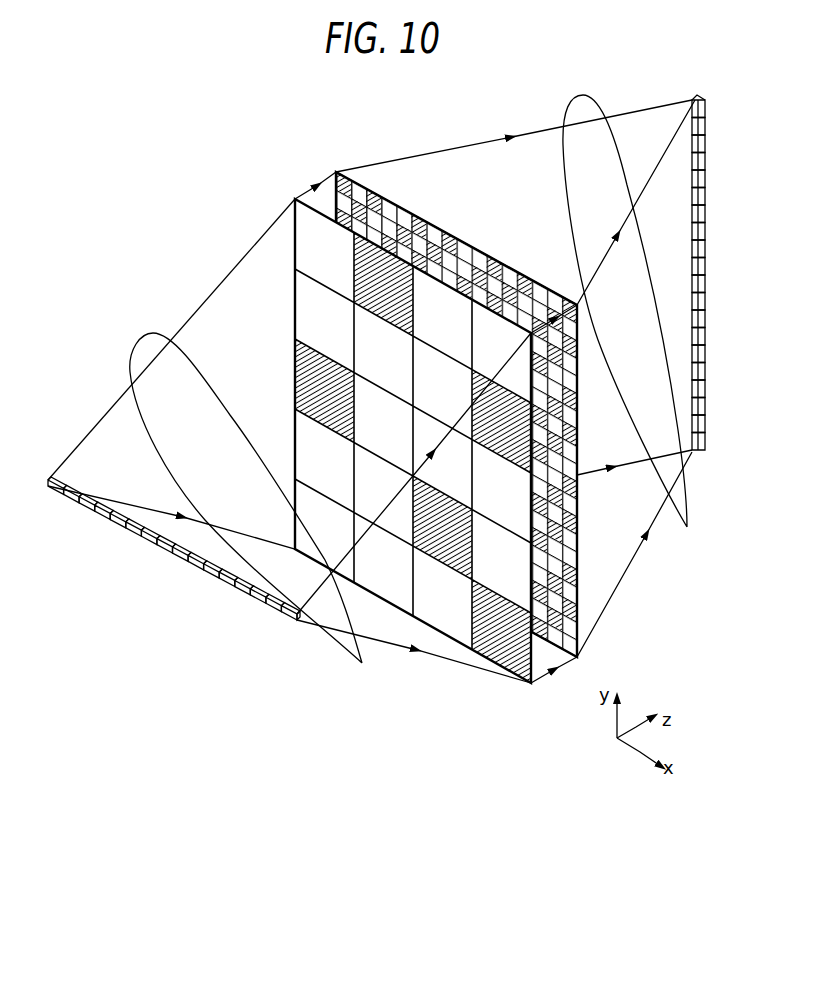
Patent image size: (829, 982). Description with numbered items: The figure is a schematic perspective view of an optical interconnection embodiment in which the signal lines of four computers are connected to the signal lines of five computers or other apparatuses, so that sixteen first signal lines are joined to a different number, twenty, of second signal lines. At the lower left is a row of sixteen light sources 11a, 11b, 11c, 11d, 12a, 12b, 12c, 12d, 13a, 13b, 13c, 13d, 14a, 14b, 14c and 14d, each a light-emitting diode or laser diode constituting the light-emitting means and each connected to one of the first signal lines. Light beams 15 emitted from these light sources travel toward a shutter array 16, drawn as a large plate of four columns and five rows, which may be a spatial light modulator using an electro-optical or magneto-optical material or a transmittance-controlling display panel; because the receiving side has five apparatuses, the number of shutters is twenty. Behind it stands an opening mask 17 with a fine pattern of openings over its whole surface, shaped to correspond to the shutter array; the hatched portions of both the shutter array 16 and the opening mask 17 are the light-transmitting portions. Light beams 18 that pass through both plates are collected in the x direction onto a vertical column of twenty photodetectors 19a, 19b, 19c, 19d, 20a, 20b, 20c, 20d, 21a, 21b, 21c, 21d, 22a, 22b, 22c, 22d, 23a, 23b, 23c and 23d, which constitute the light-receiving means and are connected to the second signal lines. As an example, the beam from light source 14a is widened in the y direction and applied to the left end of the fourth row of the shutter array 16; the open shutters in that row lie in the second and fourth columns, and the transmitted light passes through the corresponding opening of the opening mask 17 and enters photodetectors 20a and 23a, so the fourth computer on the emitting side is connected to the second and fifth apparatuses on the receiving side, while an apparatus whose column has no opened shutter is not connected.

The light source 11a is at (56, 490).
The light source 11b is at (71, 499).
The light source 11c is at (87, 507).
The light source 11d is at (102, 515).
The light source 12a is at (118, 524).
The light source 12b is at (134, 532).
The light source 12c is at (149, 540).
The light source 12d is at (165, 549).
The light source 13a is at (180, 557).
The light source 13b is at (196, 566).
The light source 13c is at (211, 574).
The light source 13d is at (227, 582).
The light source 14a is at (242, 591).
The light source 14b is at (258, 599).
The light source 14c is at (274, 607).
The light source 14d is at (289, 616).
The light beams 15 is at (362, 663).
The shutter array 16 is at (506, 670).
The opening mask 17 is at (576, 634).
The light beams 18 is at (687, 527).
The photodetector 19a is at (705, 108).
The photodetector 19b is at (705, 126).
The photodetector 19c is at (705, 143).
The photodetector 19d is at (705, 160).
The photodetector 20a is at (705, 178).
The photodetector 20b is at (705, 196).
The photodetector 20c is at (705, 213).
The photodetector 20d is at (705, 230).
The photodetector 21a is at (705, 248).
The photodetector 21b is at (705, 266).
The photodetector 21c is at (705, 283).
The photodetector 21d is at (705, 300).
The photodetector 22a is at (705, 318).
The photodetector 22b is at (705, 336).
The photodetector 22c is at (705, 353).
The photodetector 22d is at (705, 370).
The photodetector 23a is at (705, 388).
The photodetector 23b is at (705, 406).
The photodetector 23c is at (705, 423).
The photodetector 23d is at (705, 440).